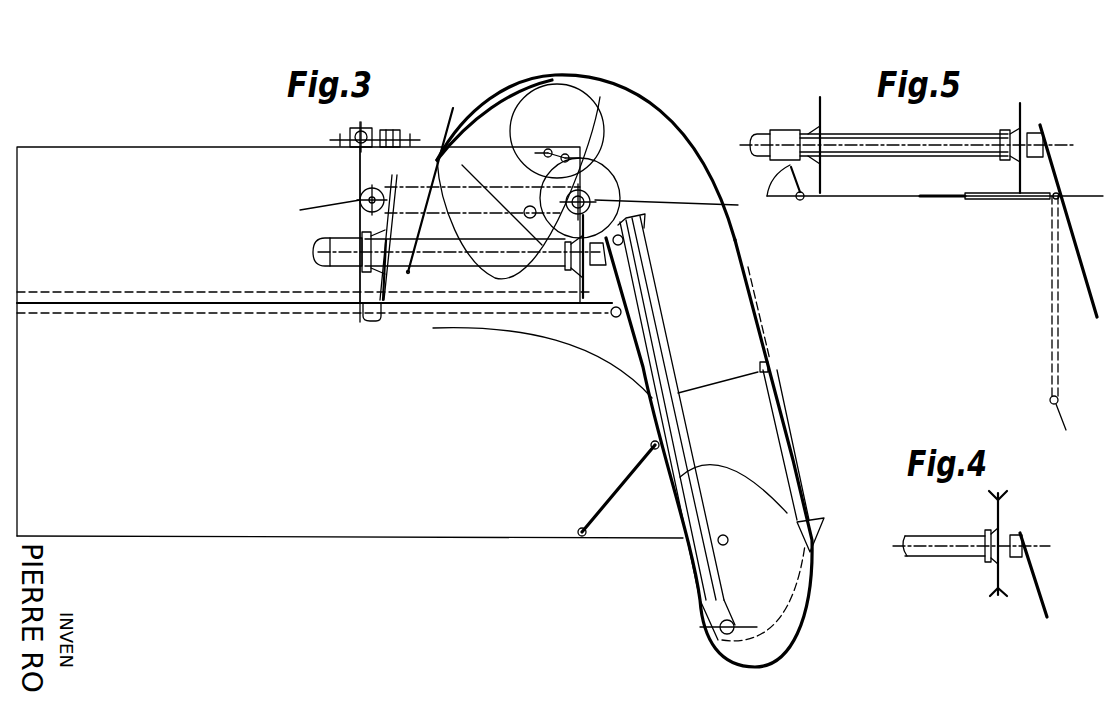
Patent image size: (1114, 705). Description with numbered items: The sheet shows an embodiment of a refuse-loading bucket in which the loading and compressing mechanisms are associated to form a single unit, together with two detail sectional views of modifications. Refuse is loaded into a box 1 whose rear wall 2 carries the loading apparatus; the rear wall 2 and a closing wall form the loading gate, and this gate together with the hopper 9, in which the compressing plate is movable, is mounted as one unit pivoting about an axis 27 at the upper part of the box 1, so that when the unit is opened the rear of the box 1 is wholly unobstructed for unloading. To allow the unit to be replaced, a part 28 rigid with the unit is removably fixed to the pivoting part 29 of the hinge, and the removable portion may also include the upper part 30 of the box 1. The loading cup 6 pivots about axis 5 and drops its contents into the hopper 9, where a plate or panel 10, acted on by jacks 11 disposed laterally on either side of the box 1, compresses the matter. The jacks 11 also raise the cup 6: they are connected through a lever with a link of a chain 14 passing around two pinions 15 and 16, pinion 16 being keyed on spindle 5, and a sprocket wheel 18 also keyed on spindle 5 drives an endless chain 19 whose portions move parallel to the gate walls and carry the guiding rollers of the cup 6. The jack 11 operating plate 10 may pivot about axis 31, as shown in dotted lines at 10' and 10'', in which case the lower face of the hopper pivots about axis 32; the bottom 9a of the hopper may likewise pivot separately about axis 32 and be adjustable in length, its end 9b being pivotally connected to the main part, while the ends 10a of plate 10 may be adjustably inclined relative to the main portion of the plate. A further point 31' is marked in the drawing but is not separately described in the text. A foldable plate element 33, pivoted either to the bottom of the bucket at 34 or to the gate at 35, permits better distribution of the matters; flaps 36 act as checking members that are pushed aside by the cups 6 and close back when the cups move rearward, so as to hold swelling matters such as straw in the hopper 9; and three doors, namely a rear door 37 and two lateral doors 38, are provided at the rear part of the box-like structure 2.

In FIG. 3, the box 1 is at (127, 470).
In FIG. 3, the rear wall 2 is at (712, 350).
In FIG. 3, the axis 5 is at (676, 208).
In FIG. 3, the loading cup 6 is at (572, 100).
In FIG. 3, the hopper 9 is at (435, 181).
In FIG. 5, the bottom of the hopper 9a is at (880, 197).
In FIG. 5, the end of the hopper bottom 9b is at (792, 200).
In FIG. 3, the compressing plate or panel 10 is at (567, 300).
In FIG. 5, the compressing plate or panel 10 is at (1002, 167).
In FIG. 4, the compressing plate or panel 10 is at (1016, 555).
In FIG. 3, the pivoted position of plate 10' is at (338, 290).
In FIG. 3, the pivoted position of plate 10'' is at (378, 266).
In FIG. 4, the ends of plate 10a is at (1009, 490).
In FIG. 3, the jack 11 is at (442, 252).
In FIG. 5, the jack 11 is at (928, 150).
In FIG. 4, the jack 11 is at (955, 550).
In FIG. 3, the chain 14 is at (503, 213).
In FIG. 3, the pinion 15 is at (317, 211).
In FIG. 3, the pinion 16 is at (610, 197).
In FIG. 3, the sprocket wheel 18 is at (615, 198).
In FIG. 3, the endless chain 19 is at (683, 422).
In FIG. 3, the axis 27 is at (368, 132).
In FIG. 3, the part 28 is at (400, 142).
In FIG. 3, the pivoting part of the hinge 29 is at (373, 189).
In FIG. 3, the upper part of the box 30 is at (123, 158).
In FIG. 5, the axis 31 is at (1062, 219).
In FIG. 3, the nut 31' is at (689, 242).
In FIG. 3, the axis 32 is at (613, 318).
In FIG. 5, the axis 32 is at (1060, 196).
In FIG. 3, the foldable plate element 33 is at (622, 482).
In FIG. 3, the pivot 34 is at (578, 532).
In FIG. 3, the pivot 35 is at (650, 446).
In FIG. 3, the flaps 36 is at (545, 84).
In FIG. 3, the rear door 37 is at (793, 438).
In FIG. 3, the lateral doors 38 is at (765, 428).